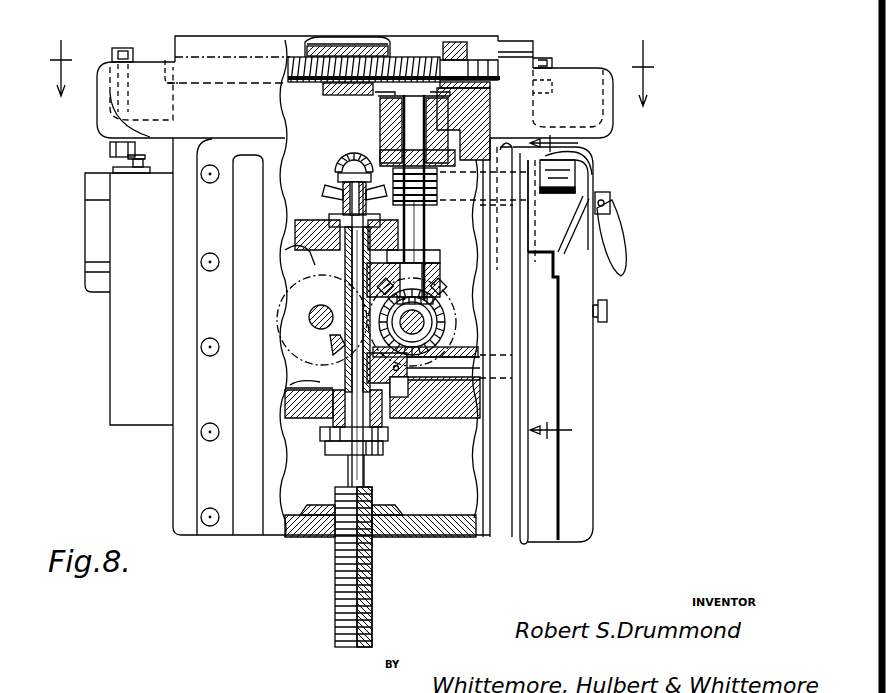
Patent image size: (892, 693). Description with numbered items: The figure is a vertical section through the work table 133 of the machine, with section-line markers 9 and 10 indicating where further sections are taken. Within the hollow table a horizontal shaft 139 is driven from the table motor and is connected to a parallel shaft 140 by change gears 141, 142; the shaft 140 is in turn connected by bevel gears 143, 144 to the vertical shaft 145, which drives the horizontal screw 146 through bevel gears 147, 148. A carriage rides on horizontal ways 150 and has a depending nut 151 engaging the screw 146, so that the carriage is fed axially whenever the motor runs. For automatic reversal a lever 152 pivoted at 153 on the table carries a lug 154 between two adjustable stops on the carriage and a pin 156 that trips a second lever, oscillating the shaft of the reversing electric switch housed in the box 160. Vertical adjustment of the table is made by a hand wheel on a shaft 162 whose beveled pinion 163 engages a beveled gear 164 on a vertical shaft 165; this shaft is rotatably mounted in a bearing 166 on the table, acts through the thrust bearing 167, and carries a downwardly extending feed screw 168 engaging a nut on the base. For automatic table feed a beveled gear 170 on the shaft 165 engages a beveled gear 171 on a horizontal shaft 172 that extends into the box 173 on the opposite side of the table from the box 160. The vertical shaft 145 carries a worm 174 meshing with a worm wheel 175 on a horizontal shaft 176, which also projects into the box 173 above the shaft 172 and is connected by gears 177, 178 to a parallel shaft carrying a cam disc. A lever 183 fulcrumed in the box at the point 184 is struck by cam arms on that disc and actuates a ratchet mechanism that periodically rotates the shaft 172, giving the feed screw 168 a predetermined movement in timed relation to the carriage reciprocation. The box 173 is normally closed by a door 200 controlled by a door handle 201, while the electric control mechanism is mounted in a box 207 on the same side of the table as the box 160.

The section line 9- 9 is at (347, 73).
The section line 10- 10 is at (566, 288).
The work table 133 is at (172, 468).
The horizontal shaft 139 is at (322, 320).
The parallel shaft 140 is at (420, 320).
The change gear 141 is at (309, 383).
The change gear 142 is at (468, 327).
The bevel gear 143 is at (445, 330).
The bevel gear 144 is at (407, 280).
The vertical shaft 145 is at (428, 220).
The horizontal screw 146 is at (402, 60).
The bevel gear 147 is at (395, 98).
The bevel gear 148 is at (460, 48).
The horizontal ways 150 is at (245, 46).
The depending nut 151 is at (342, 98).
The lever 152 is at (110, 154).
The pivot 153 is at (112, 92).
The lug 154 is at (131, 54).
The pin 156 is at (135, 170).
The box 160 is at (92, 226).
The shaft 162 is at (345, 166).
The beveled pinion 163 is at (338, 173).
The beveled gear 164 is at (338, 190).
The vertical shaft 165 is at (348, 275).
The bearing 166 is at (347, 410).
The thrust bearing 167 is at (385, 447).
The feed screw 168 is at (372, 563).
The beveled gear 170 is at (330, 350).
The beveled gear 171 is at (385, 432).
The horizontal shaft 172 is at (470, 363).
The box 173 is at (535, 348).
The worm 174 is at (438, 186).
The worm wheel 175 is at (390, 140).
The horizontal shaft 176 is at (508, 138).
The gear 177 is at (577, 165).
The gear 178 is at (558, 350).
The lever 183 is at (575, 173).
The fulcrum point 184 is at (577, 188).
The door 200 is at (596, 417).
The door handle 201 is at (606, 234).
The box 207 is at (118, 346).